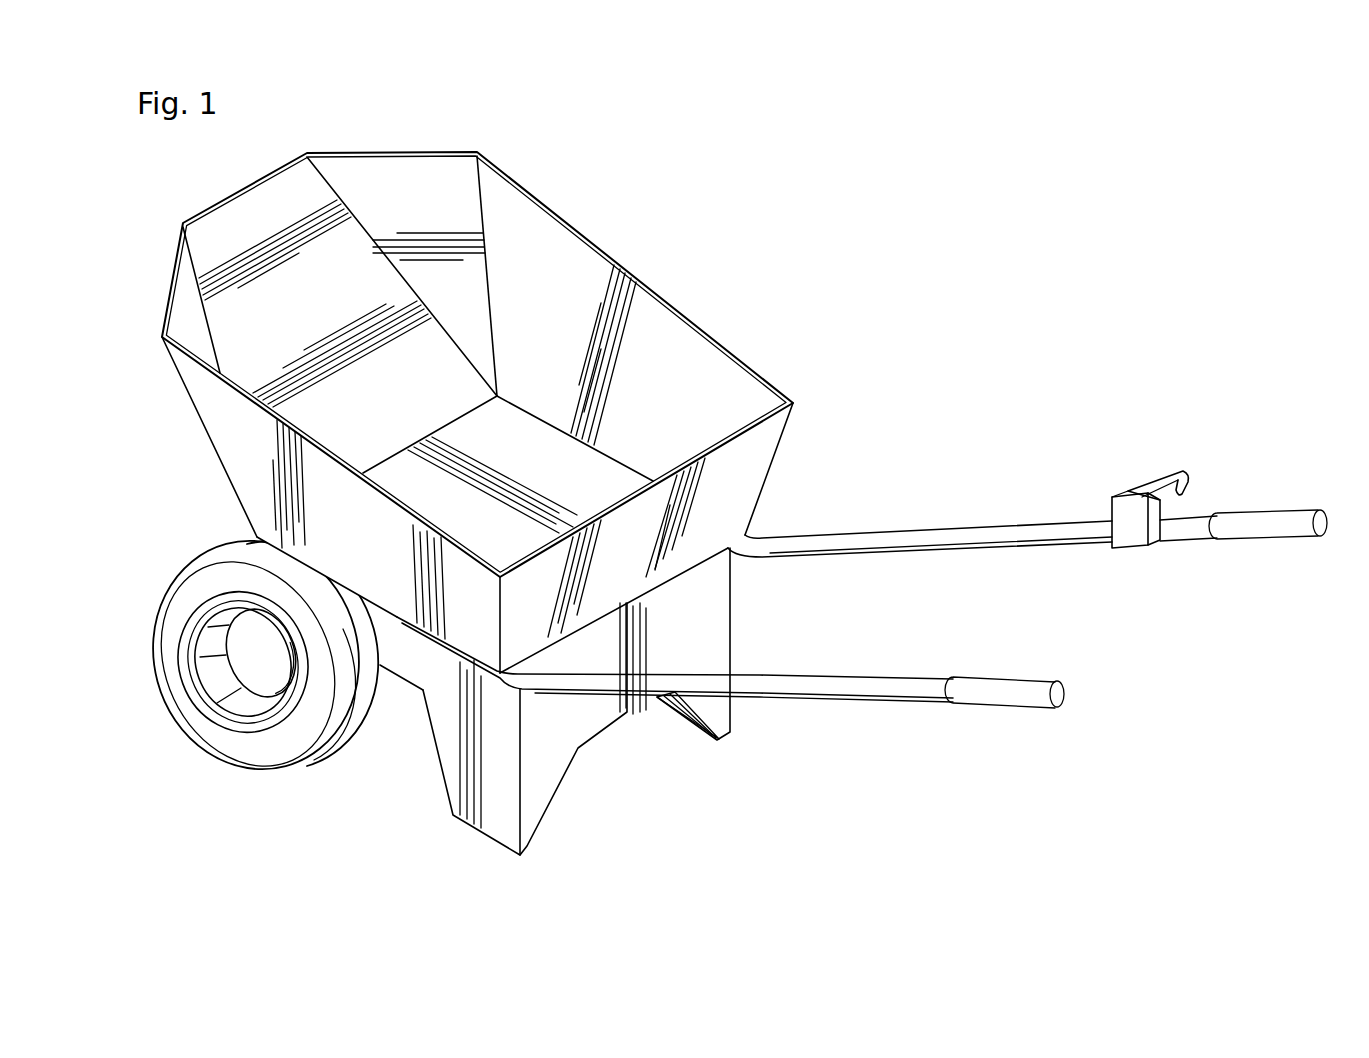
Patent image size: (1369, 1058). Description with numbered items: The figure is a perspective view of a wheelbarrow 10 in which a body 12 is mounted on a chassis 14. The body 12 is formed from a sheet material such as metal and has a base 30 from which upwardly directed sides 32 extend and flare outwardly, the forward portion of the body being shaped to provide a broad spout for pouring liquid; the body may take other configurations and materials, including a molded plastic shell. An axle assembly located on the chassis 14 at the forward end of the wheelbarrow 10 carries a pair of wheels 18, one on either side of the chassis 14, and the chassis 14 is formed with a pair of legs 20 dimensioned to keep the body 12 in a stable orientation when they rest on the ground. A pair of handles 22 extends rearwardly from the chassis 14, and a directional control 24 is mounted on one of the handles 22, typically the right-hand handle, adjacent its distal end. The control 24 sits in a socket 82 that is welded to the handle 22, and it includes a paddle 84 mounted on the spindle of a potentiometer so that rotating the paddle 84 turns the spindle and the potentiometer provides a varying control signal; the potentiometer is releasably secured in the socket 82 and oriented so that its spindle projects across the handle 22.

The wheelbarrow 10 is at (708, 316).
The body 12 is at (230, 425).
The chassis 14 is at (405, 650).
The wheels 18 is at (157, 620).
The legs 20 is at (545, 793).
The handles 22 is at (857, 687).
The directional control 24 is at (1100, 494).
The base 30 is at (466, 533).
The sides 32 is at (580, 253).
The socket 82 is at (1132, 537).
The paddle 84 is at (1188, 488).